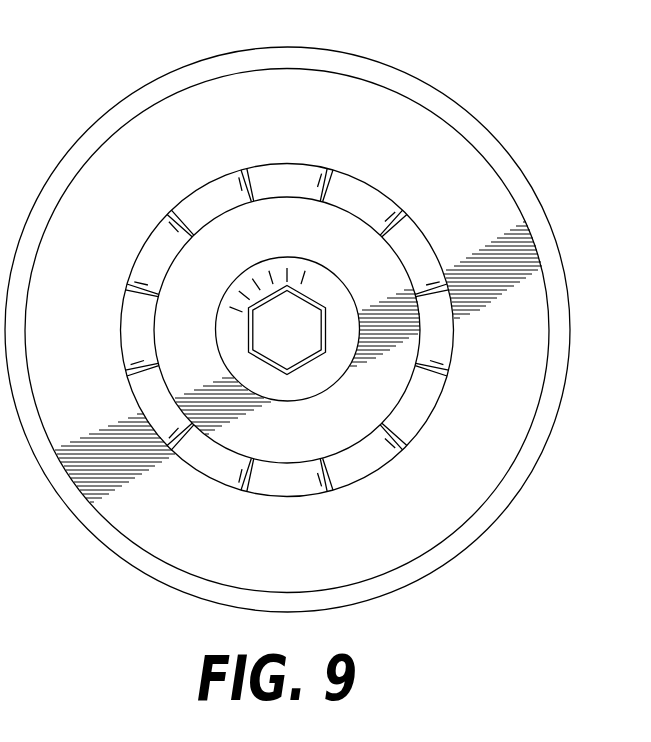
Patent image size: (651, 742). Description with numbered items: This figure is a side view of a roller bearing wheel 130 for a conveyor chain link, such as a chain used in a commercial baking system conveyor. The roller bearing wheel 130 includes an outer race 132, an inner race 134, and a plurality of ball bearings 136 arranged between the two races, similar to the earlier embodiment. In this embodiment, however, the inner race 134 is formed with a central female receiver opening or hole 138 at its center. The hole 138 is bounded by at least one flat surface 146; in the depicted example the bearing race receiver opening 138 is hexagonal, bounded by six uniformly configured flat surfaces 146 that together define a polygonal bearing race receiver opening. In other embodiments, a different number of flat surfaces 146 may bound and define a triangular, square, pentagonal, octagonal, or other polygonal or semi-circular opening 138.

The roller bearing wheel 130 is at (541, 115).
The outer race 132 is at (523, 350).
The inner race 134 is at (382, 392).
The ball bearings 136 is at (357, 199).
The bearing race receiver opening 138 is at (292, 322).
The flat surface 146 is at (247, 328).